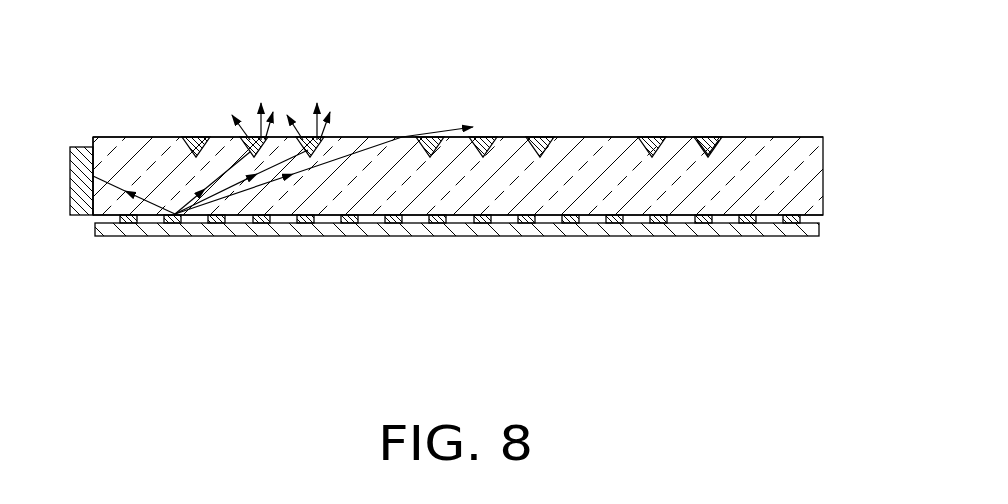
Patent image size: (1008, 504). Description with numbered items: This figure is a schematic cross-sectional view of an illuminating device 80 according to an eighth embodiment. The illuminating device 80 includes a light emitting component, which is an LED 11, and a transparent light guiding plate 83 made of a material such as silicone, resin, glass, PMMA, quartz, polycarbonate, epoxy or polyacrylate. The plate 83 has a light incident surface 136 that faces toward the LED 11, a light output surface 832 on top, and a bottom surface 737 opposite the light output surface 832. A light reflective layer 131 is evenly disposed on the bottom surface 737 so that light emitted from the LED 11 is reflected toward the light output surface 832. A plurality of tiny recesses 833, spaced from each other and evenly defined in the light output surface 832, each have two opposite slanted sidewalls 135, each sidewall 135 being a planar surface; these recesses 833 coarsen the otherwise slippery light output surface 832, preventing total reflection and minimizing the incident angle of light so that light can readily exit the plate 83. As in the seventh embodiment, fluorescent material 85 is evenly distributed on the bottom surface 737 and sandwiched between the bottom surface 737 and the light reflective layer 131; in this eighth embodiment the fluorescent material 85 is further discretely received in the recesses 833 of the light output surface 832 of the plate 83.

The illuminating device 80 is at (409, 87).
The plate 83 is at (803, 177).
The light output surface 832 is at (788, 137).
The recesses 833 is at (700, 138).
The fluorescent material 85 is at (706, 138).
The slanted sidewall 135 is at (716, 138).
The light reflective layer 131 is at (808, 232).
The light incident surface 136 is at (93, 139).
The bottom surface 737 is at (95, 214).
The LED 11 is at (76, 176).